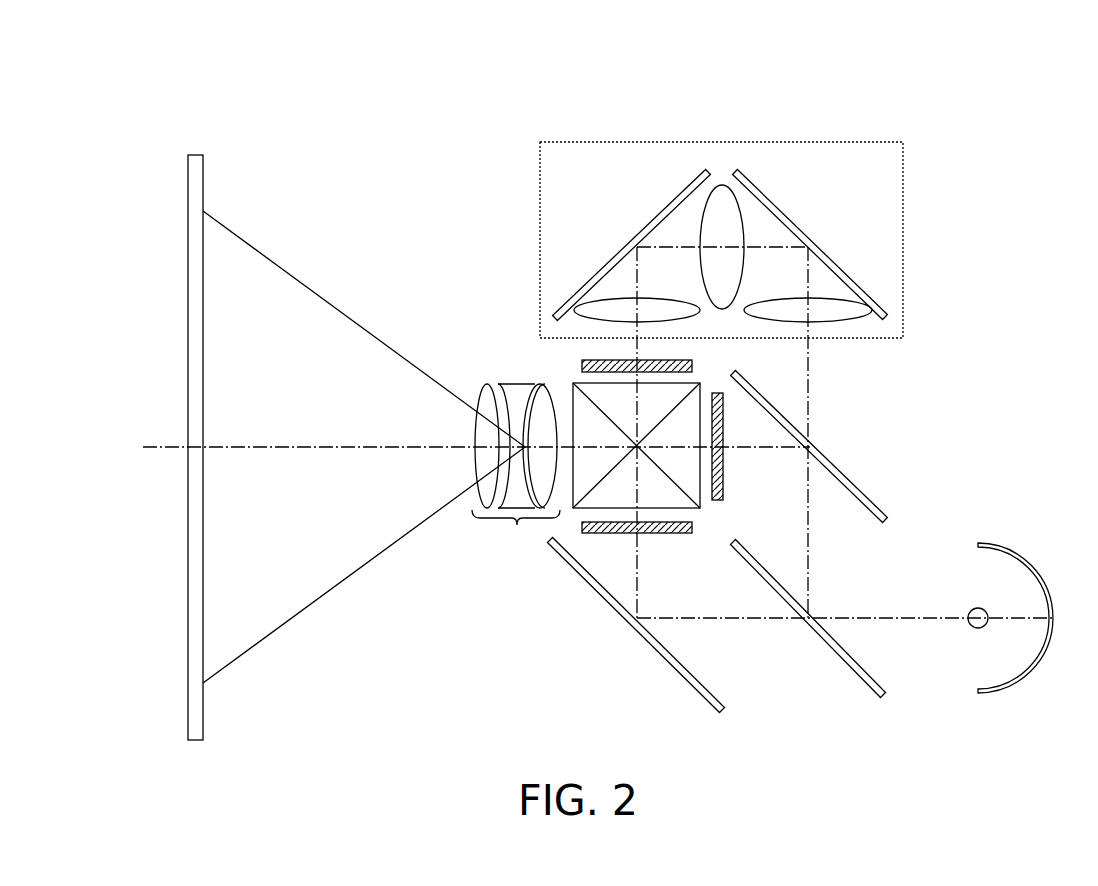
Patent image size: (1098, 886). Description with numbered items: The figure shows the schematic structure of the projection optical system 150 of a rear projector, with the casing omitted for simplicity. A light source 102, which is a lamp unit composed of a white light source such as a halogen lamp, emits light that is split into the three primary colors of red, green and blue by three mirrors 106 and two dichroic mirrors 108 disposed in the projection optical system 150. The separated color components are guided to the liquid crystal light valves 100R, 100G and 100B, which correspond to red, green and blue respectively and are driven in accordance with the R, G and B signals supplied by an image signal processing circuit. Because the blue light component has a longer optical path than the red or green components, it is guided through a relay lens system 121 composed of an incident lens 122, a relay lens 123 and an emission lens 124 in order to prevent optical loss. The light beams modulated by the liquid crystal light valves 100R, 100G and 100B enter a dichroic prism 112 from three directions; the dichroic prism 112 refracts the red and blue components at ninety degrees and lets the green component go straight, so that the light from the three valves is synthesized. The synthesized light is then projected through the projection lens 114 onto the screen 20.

The screen 20 is at (188, 333).
The light source 102 is at (982, 627).
The mirror 106 is at (647, 220).
The dichroic mirror 108 is at (870, 500).
The dichroic prism 112 is at (580, 367).
The projection lens 114 is at (517, 540).
The relay lens system 121 is at (903, 208).
The incident lens 122 is at (832, 317).
The relay lens 123 is at (743, 228).
The emission lens 124 is at (610, 307).
The projection optical system 150 is at (898, 102).
The liquid crystal light valve (blue) 100B is at (577, 404).
The liquid crystal light valve (green) 100G is at (720, 482).
The liquid crystal light valve (red) 100R is at (657, 533).